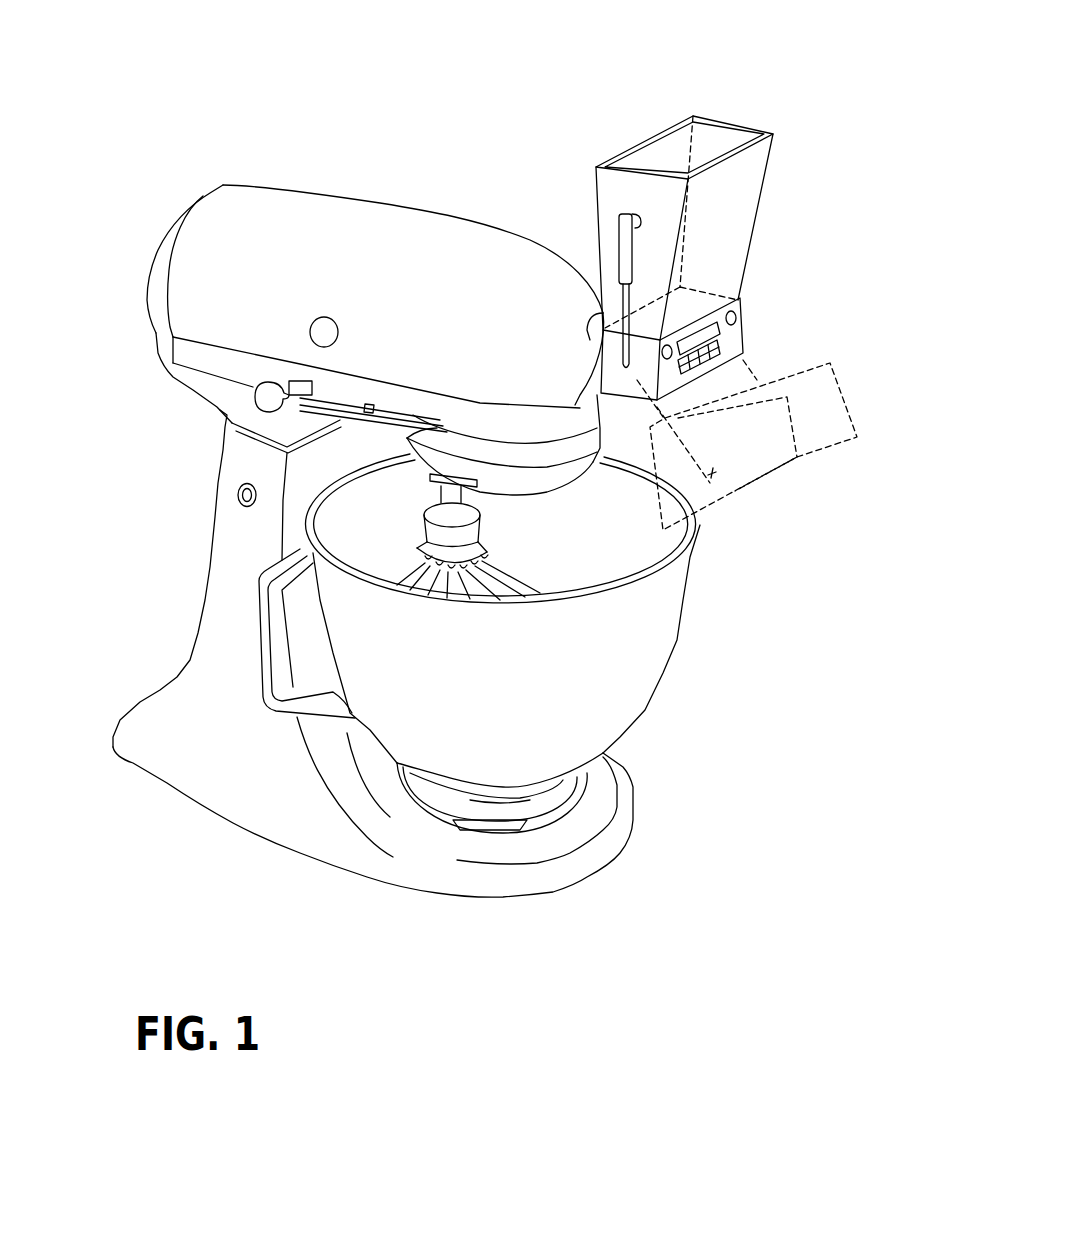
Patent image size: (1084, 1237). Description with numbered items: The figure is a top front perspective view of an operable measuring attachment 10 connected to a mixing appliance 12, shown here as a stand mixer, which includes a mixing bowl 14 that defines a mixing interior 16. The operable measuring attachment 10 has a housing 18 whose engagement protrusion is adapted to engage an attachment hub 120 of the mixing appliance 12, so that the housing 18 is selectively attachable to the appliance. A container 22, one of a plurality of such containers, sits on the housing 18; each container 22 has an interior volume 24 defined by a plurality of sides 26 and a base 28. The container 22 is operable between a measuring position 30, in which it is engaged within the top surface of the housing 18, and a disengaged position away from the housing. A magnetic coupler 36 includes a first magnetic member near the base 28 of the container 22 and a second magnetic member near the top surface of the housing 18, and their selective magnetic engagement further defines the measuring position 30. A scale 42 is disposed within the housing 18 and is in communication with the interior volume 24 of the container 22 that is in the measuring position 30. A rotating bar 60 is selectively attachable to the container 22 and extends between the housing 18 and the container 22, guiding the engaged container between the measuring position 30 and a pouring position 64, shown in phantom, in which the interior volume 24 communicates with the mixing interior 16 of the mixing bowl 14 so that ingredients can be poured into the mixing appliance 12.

The operable measuring attachment 10 is at (824, 76).
The mixing appliance 12 is at (252, 168).
The mixing bowl 14 is at (672, 675).
The mixing interior 16 is at (577, 557).
The housing 18 is at (750, 339).
The container 22 is at (617, 142).
The interior volume 24 is at (710, 148).
The sides 26 is at (613, 197).
The base 28 is at (841, 402).
The measuring position 30 is at (792, 168).
The magnetic coupler 36 is at (750, 285).
The scale 42 is at (712, 330).
The rotating bar 60 is at (620, 246).
The pouring position 64 is at (785, 500).
The attachment hub 120 is at (573, 393).